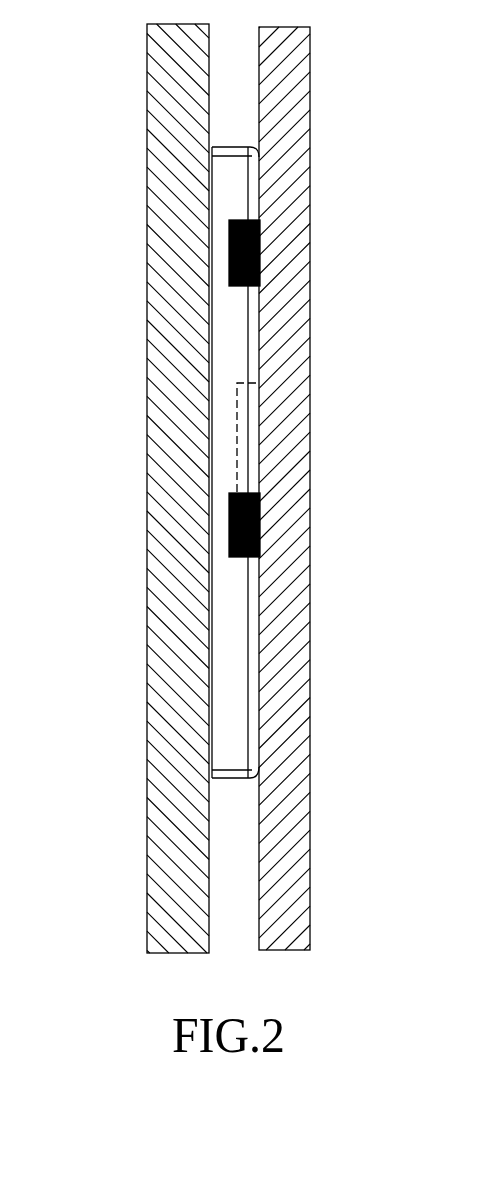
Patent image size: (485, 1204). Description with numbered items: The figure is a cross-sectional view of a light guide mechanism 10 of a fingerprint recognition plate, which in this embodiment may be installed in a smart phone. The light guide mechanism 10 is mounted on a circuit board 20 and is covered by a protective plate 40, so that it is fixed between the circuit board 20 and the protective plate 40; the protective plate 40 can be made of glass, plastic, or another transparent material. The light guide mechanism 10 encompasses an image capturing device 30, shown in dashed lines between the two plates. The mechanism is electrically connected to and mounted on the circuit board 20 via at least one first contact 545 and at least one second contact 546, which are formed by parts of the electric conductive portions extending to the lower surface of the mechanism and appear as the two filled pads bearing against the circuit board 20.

The light guide mechanism 10 is at (230, 640).
The circuit board 20 is at (287, 828).
The image capturing device 30 is at (237, 424).
The protective plate 40 is at (172, 485).
The first contact 545 is at (260, 527).
The second contact 546 is at (257, 243).